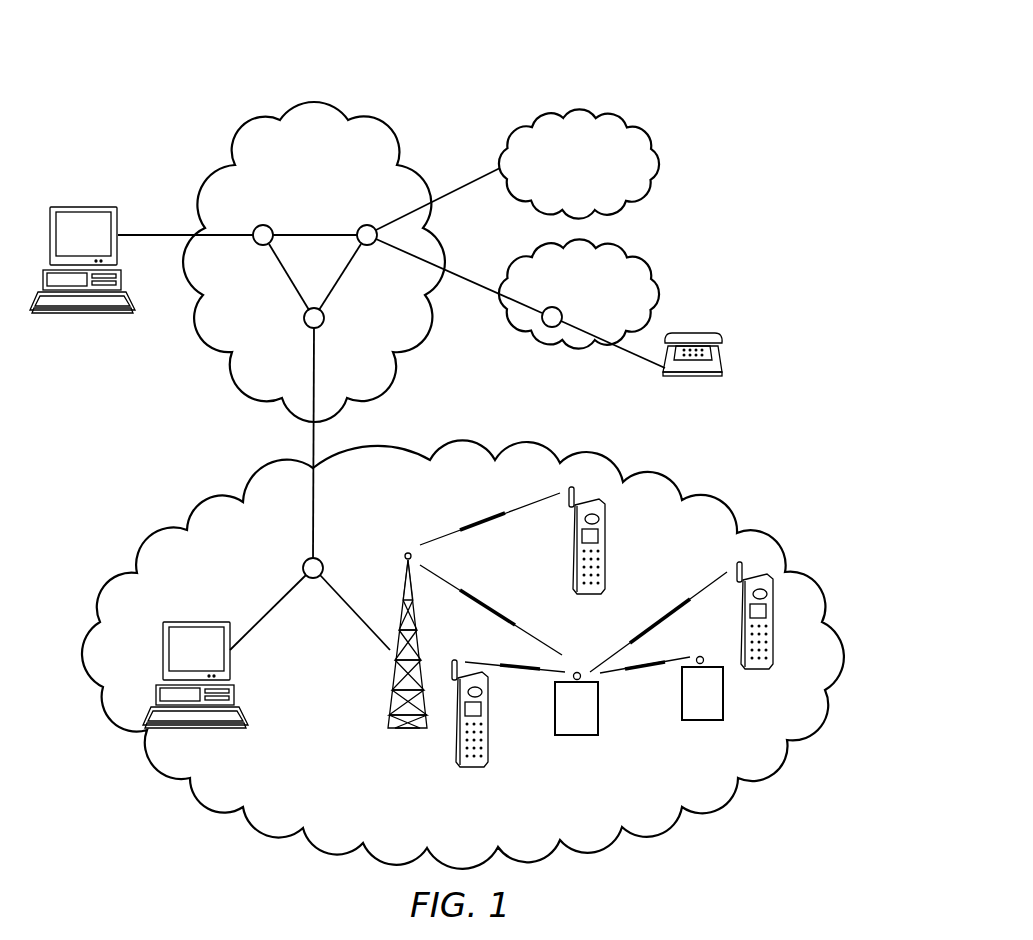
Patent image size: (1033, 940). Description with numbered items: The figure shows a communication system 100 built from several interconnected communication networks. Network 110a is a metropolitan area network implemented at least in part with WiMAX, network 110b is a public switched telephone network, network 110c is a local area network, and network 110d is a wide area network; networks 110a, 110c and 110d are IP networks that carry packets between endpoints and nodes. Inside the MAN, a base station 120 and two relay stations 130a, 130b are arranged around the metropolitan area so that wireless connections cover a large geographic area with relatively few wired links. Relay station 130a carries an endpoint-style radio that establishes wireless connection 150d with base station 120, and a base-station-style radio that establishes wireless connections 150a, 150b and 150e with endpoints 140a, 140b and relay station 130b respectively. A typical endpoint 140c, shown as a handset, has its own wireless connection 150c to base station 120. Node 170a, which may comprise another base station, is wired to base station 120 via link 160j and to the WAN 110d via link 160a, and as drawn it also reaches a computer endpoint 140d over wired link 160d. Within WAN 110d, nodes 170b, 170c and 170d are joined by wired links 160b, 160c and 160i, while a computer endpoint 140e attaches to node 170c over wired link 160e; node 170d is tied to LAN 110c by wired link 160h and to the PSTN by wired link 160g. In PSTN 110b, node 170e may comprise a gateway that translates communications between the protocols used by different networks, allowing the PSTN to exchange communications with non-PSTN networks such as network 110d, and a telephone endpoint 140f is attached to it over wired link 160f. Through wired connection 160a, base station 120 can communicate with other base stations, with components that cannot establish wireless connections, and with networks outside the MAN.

The communication system 100 is at (657, 69).
The network (MAN) 110a is at (208, 502).
The network (PSTN) 110b is at (545, 352).
The network (LAN) 110c is at (660, 166).
The network (WAN) 110d is at (243, 125).
The base station 120 is at (392, 690).
The relay station 130a is at (580, 738).
The relay station 130b is at (704, 722).
The endpoint 140a is at (447, 740).
The endpoint 140b is at (765, 668).
The endpoint 140c is at (608, 540).
The endpoint 140d is at (195, 621).
The endpoint 140e is at (80, 206).
The endpoint 140f is at (695, 332).
The wireless connection 150a is at (533, 670).
The wireless connection 150b is at (688, 600).
The wireless connection 150c is at (536, 502).
The wireless connection 150d is at (520, 628).
The wireless connection 150e is at (620, 670).
The wired connection 160a is at (318, 524).
The wired link 160b is at (288, 276).
The wired link 160c is at (341, 276).
The wired link 160d is at (272, 609).
The wired link 160e is at (170, 234).
The wired link 160f is at (640, 357).
The wired link 160g is at (466, 279).
The wired link 160h is at (465, 186).
The wired link 160i is at (323, 234).
The link 160j is at (348, 604).
The node 170a is at (302, 563).
The node 170b is at (326, 323).
The node 170c is at (262, 224).
The node 170d is at (370, 224).
The node 170e is at (556, 306).